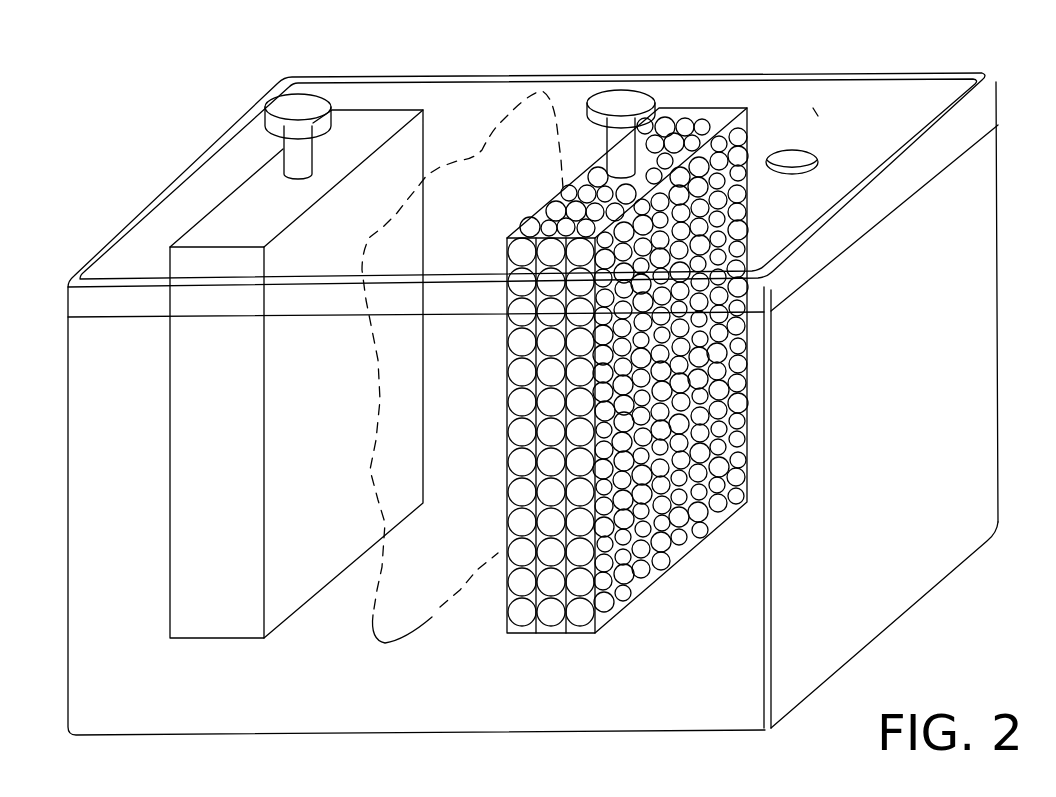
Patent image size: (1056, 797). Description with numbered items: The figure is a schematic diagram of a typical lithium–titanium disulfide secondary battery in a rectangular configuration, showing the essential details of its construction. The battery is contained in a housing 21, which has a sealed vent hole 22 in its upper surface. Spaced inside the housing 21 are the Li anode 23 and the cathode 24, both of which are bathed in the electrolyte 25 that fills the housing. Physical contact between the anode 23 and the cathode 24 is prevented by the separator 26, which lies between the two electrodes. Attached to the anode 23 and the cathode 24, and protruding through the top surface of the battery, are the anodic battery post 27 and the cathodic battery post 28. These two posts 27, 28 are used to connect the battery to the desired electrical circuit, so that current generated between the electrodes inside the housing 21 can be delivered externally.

The housing 21 is at (985, 242).
The sealed vent hole 22 is at (805, 150).
The Li anode 23 is at (170, 547).
The cathode 24 is at (683, 562).
The electrolyte 25 is at (321, 699).
The separator 26 is at (432, 618).
The anodic battery post 27 is at (330, 93).
The cathodic battery post 28 is at (659, 107).